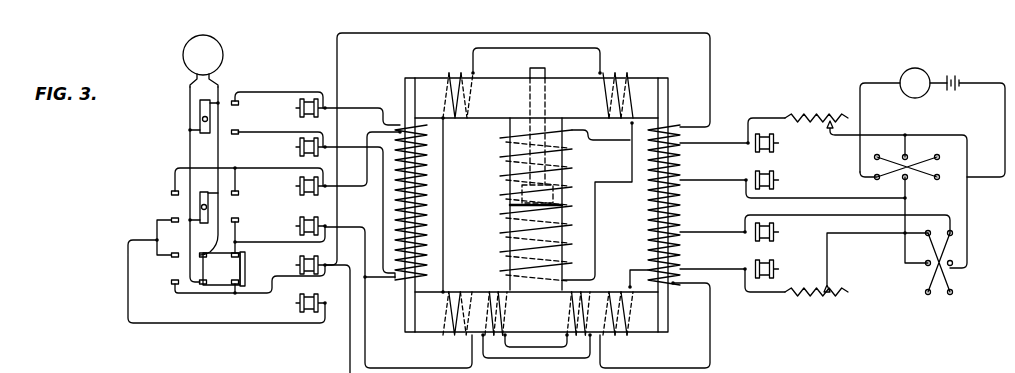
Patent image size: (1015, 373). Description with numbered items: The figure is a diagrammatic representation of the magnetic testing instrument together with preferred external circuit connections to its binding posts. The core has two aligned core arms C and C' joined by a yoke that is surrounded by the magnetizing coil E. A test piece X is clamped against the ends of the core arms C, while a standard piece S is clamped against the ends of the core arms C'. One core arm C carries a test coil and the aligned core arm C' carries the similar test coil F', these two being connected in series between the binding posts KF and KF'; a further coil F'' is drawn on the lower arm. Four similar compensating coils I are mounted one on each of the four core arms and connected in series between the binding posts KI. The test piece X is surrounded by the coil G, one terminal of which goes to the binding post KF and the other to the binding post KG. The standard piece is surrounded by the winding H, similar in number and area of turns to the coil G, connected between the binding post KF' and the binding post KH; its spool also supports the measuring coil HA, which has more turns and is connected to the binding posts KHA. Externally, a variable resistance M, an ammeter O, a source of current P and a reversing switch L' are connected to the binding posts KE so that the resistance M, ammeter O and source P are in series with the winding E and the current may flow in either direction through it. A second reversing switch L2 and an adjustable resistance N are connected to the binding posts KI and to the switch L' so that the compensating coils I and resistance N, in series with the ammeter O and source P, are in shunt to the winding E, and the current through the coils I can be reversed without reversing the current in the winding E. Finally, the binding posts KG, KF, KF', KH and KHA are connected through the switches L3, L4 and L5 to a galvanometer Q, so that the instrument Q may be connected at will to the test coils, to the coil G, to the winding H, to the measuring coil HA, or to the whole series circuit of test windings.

The galvanometer Q is at (224, 55).
The switch L5 is at (200, 112).
The switch L4 is at (200, 200).
The switch L3 is at (224, 269).
The binding posts KHA is at (296, 147).
The binding post KH is at (296, 186).
The binding post KF' is at (291, 227).
The binding post KF is at (286, 266).
The binding post KG is at (296, 303).
The standard piece S is at (404, 92).
The test piece X is at (666, 316).
The core arm C' is at (456, 204).
The core arm C is at (605, 204).
The compensating coils I is at (631, 337).
The magnetizing coil E is at (505, 157).
The coil F'' is at (535, 325).
The test coil F' is at (566, 314).
The winding H is at (418, 232).
The measuring coil HA is at (430, 217).
The coil G is at (676, 206).
The binding posts KE is at (781, 162).
The binding posts KI is at (776, 270).
The variable resistance M is at (818, 116).
The adjustable resistance N is at (810, 298).
The ammeter O is at (920, 66).
The source of electromotive current P is at (959, 80).
The reversing switch L' is at (900, 198).
The reversing switch L2 is at (925, 264).